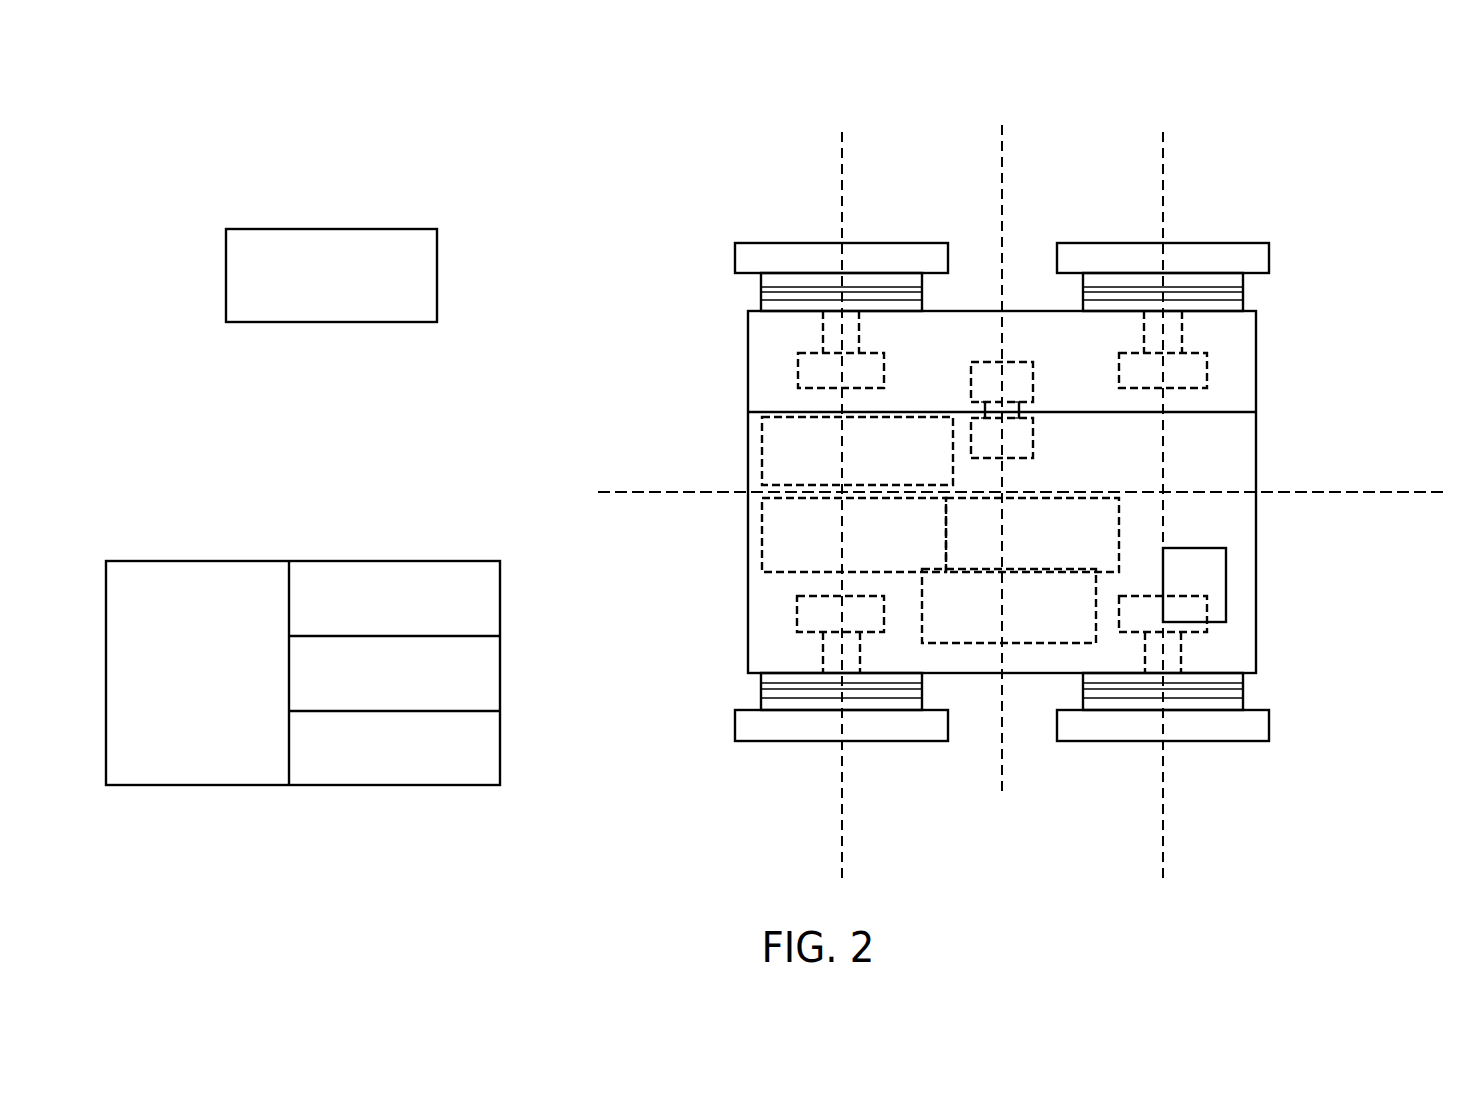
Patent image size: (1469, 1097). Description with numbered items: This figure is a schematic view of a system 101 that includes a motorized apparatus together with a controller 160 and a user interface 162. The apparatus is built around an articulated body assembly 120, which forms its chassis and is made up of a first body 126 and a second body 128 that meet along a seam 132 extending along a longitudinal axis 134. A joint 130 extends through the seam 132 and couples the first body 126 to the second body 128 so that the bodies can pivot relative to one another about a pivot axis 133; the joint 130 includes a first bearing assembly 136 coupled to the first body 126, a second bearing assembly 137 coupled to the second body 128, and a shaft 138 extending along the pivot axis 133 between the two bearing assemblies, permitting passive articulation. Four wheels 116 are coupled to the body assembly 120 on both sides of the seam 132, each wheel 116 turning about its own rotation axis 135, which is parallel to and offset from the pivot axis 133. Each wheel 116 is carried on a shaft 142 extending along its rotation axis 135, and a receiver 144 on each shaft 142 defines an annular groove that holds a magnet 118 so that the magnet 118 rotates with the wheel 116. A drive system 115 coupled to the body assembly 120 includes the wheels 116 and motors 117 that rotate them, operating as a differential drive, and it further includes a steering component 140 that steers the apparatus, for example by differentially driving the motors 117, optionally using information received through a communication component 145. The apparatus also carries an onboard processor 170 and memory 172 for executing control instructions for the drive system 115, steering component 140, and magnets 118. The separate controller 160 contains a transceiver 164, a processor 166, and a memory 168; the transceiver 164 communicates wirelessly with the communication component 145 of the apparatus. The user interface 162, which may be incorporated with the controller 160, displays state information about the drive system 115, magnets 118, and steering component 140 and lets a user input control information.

The system 101 is at (280, 96).
The drive system 115 is at (765, 326).
The wheels 116 is at (883, 243).
The motors 117 is at (797, 372).
The magnet 118 is at (777, 293).
The articulated body assembly 120 is at (1358, 346).
The first body 126 is at (1022, 310).
The second body 128 is at (1015, 675).
The joint 130 is at (983, 340).
The seam 132 is at (1256, 414).
The pivot axis 133 is at (1004, 140).
The longitudinal axis 134 is at (1437, 490).
The rotation axis 135 is at (840, 147).
The first bearing assembly 136 is at (1040, 380).
The second bearing assembly 137 is at (1040, 438).
The shaft 138 is at (983, 406).
The steering component 140 is at (1033, 645).
The shaft 142 is at (822, 338).
The receiver 144 is at (806, 270).
The communication component 145 is at (760, 445).
The controller 160 is at (197, 785).
The user interface 162 is at (330, 229).
The transceiver 164 is at (470, 636).
The processor 166 is at (470, 711).
The memory 168 is at (393, 785).
The processor 170 is at (760, 530).
The memory 172 is at (1120, 524).